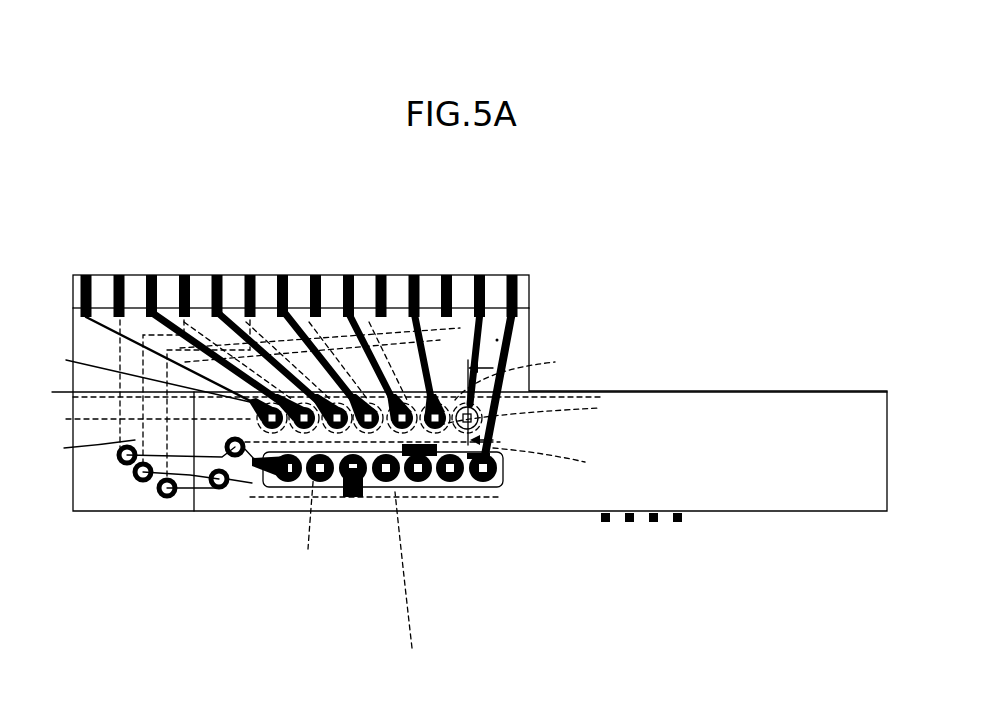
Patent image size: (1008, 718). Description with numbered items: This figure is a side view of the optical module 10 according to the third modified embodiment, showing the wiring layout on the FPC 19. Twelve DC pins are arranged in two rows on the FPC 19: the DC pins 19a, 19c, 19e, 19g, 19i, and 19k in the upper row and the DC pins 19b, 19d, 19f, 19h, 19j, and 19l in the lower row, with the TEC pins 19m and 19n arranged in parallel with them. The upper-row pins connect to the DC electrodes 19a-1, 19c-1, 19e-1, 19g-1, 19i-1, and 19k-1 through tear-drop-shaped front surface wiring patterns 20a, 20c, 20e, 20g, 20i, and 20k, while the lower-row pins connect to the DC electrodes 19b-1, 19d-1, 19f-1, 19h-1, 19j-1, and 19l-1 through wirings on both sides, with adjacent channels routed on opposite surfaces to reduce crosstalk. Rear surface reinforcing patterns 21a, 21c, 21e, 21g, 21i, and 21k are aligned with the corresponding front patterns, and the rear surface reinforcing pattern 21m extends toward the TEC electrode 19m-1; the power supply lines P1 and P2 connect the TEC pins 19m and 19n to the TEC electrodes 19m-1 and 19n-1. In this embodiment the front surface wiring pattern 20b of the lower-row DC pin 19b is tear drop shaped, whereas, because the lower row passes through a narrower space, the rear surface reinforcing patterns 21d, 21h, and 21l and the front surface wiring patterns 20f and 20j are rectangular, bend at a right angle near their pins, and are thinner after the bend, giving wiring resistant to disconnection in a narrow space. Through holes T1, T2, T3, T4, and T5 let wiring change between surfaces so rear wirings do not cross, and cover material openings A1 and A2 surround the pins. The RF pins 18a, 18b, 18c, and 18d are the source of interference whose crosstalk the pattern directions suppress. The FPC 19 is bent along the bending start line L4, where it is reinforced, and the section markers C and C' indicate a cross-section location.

The optical module 10 is at (854, 513).
The FPC 19 is at (530, 292).
The DC electrode 19a-1 is at (90, 298).
The DC electrode 19b-1 is at (124, 298).
The DC electrode 19c-1 is at (156, 298).
The DC electrode 19d-1 is at (190, 298).
The DC electrode 19e-1 is at (222, 298).
The DC electrode 19f-1 is at (255, 298).
The DC electrode 19g-1 is at (288, 298).
The DC electrode 19h-1 is at (321, 298).
The DC electrode 19i-1 is at (354, 298).
The DC electrode 19j-1 is at (386, 298).
The DC electrode 19k-1 is at (419, 298).
The DC electrode 19l-1 is at (452, 298).
The TEC electrode 19m-1 is at (485, 298).
The TEC electrode 19n-1 is at (517, 298).
The DC pin 19a is at (272, 428).
The DC pin 19b is at (288, 483).
The DC pin 19c is at (304, 430).
The DC pin 19d is at (320, 483).
The DC pin 19e is at (337, 430).
The DC pin 19f is at (353, 483).
The DC pin 19g is at (368, 430).
The DC pin 19h is at (386, 483).
The DC pin 19i is at (402, 430).
The DC pin 19j is at (418, 483).
The DC pin 19k is at (435, 430).
The DC pin 19l is at (450, 483).
The TEC pin 19m is at (482, 428).
The TEC pin 19n is at (484, 483).
The front surface wiring pattern 20a is at (159, 369).
The front surface wiring pattern 20b is at (274, 472).
The front surface wiring pattern 20c is at (280, 392).
The front surface wiring pattern 20e is at (313, 392).
The front surface wiring pattern 20f is at (358, 492).
The front surface wiring pattern 20g is at (352, 392).
The front surface wiring pattern 20i is at (398, 392).
The front surface wiring pattern 20j is at (428, 458).
The front surface wiring pattern 20k is at (430, 392).
The rear surface reinforcing pattern 21a is at (143, 418).
The rear surface reinforcing pattern 21c is at (238, 360).
The rear surface reinforcing pattern 21d is at (307, 518).
The rear surface reinforcing pattern 21e is at (298, 360).
The rear surface reinforcing pattern 21g is at (359, 361).
The rear surface reinforcing pattern 21h is at (409, 579).
The rear surface reinforcing pattern 21i is at (410, 361).
The rear surface reinforcing pattern 21k is at (520, 377).
The rear surface reinforcing pattern 21l is at (550, 459).
The rear surface reinforcing pattern 21m is at (538, 412).
The through hole T1 is at (127, 463).
The through hole T2 is at (143, 480).
The through hole T3 is at (167, 496).
The through hole T4 is at (230, 455).
The through hole T5 is at (221, 487).
The cover material opening A1 is at (87, 447).
The cover material opening A2 is at (500, 472).
The power supply line P1 is at (497, 340).
The power supply line P2 is at (511, 323).
The bending start line L4 is at (592, 392).
The section line C is at (491, 437).
The section line C' is at (482, 396).
The RF pin 18a is at (605, 523).
The RF pin 18b is at (630, 523).
The RF pin 18c is at (654, 523).
The RF pin 18d is at (678, 523).